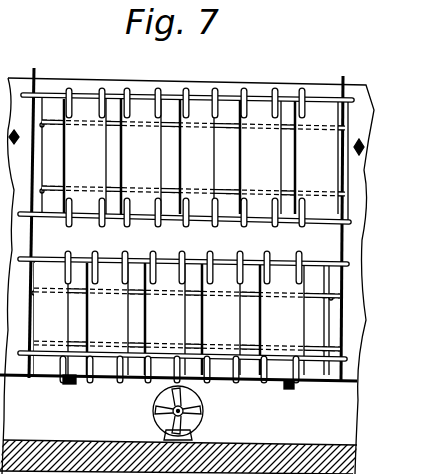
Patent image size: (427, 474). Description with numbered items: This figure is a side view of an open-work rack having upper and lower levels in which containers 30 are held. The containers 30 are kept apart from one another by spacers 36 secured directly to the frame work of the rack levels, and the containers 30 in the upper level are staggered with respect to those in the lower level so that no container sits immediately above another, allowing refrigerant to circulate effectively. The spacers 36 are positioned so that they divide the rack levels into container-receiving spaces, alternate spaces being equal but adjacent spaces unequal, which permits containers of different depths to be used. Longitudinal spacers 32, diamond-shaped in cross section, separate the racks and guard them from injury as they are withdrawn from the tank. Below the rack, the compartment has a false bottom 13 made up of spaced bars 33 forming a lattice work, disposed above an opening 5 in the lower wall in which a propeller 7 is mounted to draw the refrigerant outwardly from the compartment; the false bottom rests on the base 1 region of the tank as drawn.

The base 1 is at (316, 455).
The opening 5 is at (200, 400).
The propeller 7 is at (195, 412).
The false bottom 13 is at (70, 385).
The container 30 is at (50, 152).
The longitudinal spacer 32 is at (358, 142).
The spaced bar 33 is at (34, 378).
The spacer 36 is at (97, 95).